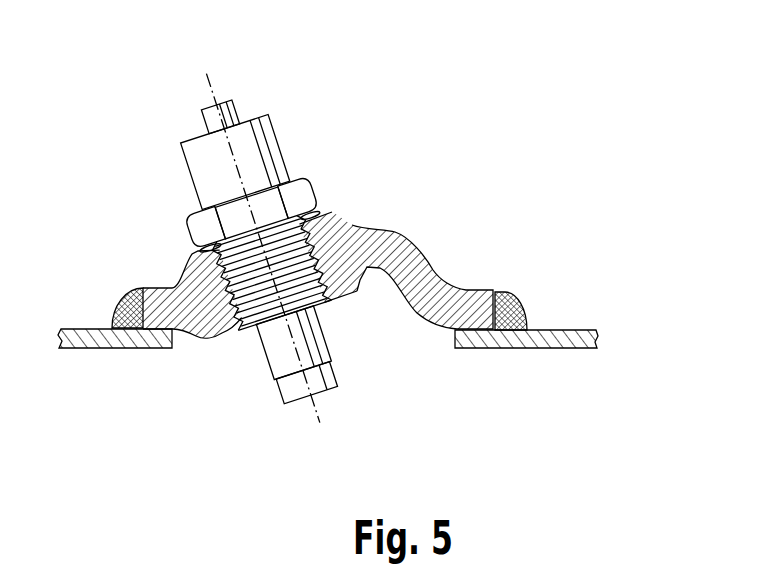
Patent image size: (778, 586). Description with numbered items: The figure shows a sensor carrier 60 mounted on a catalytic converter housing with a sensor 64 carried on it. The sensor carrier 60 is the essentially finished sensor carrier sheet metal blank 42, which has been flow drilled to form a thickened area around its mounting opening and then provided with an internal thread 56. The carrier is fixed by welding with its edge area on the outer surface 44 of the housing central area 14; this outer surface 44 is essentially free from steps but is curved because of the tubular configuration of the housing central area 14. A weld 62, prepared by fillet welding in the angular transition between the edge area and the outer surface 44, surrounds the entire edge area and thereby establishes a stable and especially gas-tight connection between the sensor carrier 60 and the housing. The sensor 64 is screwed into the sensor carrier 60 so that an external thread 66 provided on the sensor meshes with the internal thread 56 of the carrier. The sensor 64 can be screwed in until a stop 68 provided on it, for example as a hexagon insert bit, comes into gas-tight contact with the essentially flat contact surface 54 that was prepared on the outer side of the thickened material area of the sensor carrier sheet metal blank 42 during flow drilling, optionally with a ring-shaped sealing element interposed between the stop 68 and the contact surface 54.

The sensor carrier 60 is at (529, 99).
The sensor 64 is at (264, 142).
The stop 68 is at (310, 190).
The contact surface 54 is at (330, 210).
The sensor carrier sheet metal blank 42 is at (422, 276).
The weld 62 is at (508, 316).
The outer surface 44 is at (562, 328).
The housing central area 14 is at (497, 347).
The external thread 66 is at (218, 275).
The internal thread 56 is at (233, 298).